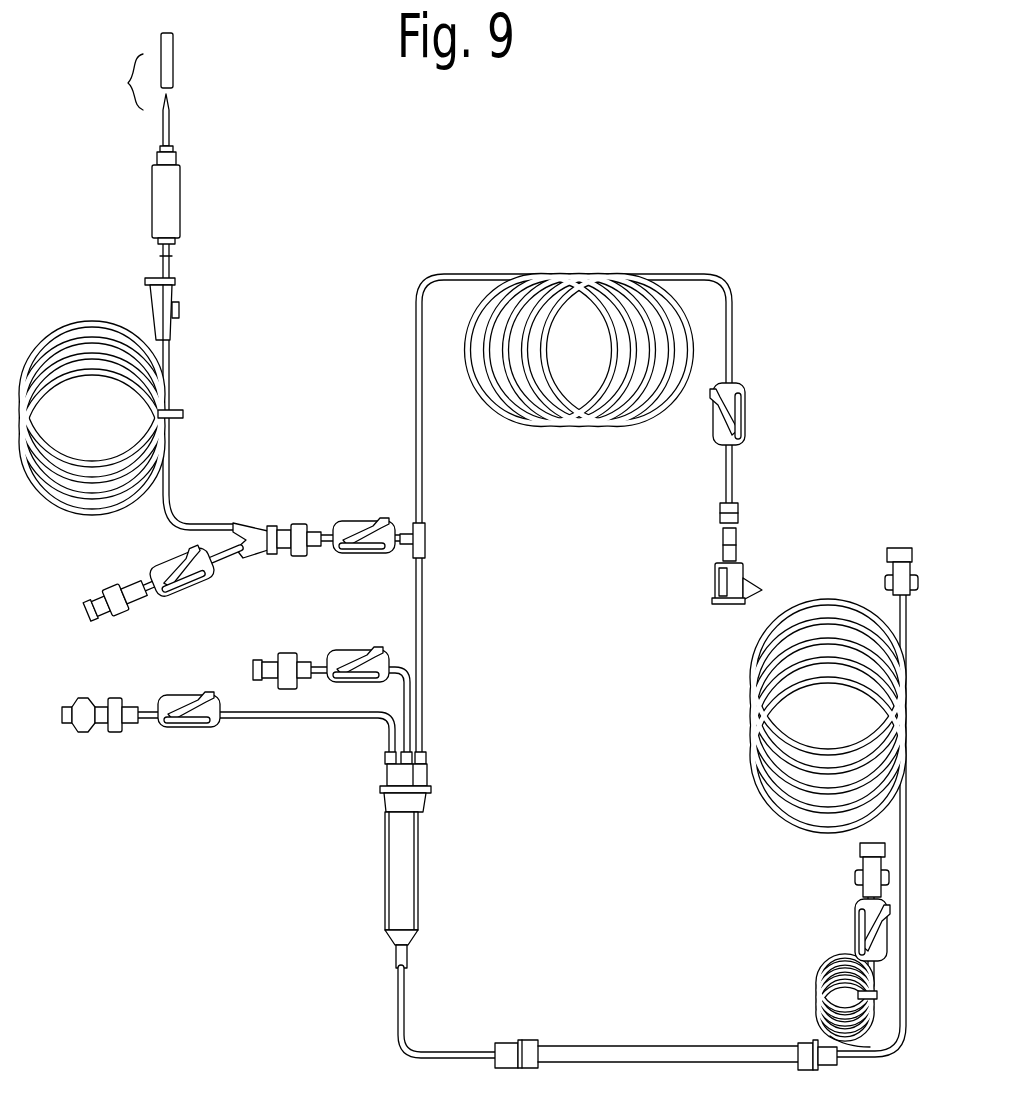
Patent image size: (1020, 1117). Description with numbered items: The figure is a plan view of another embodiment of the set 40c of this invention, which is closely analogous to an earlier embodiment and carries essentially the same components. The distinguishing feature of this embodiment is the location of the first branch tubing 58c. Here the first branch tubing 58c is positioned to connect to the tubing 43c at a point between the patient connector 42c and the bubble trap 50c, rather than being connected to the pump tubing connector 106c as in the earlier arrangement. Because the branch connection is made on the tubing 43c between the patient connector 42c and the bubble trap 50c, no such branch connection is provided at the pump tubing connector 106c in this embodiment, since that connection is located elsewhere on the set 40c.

The set 40c is at (397, 1000).
The patient connector 42c is at (725, 600).
The tubing 43c is at (413, 386).
The bubble trap 50c is at (412, 868).
The first branch tubing 58c is at (334, 528).
The pump tubing connector 106c is at (523, 1047).